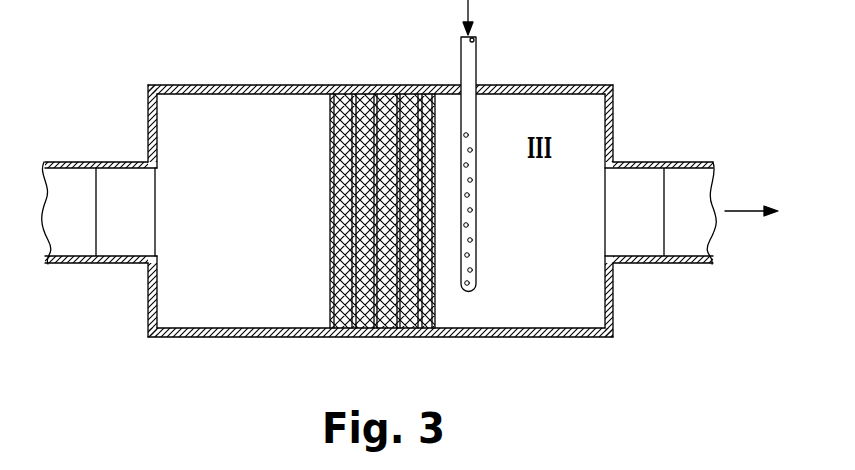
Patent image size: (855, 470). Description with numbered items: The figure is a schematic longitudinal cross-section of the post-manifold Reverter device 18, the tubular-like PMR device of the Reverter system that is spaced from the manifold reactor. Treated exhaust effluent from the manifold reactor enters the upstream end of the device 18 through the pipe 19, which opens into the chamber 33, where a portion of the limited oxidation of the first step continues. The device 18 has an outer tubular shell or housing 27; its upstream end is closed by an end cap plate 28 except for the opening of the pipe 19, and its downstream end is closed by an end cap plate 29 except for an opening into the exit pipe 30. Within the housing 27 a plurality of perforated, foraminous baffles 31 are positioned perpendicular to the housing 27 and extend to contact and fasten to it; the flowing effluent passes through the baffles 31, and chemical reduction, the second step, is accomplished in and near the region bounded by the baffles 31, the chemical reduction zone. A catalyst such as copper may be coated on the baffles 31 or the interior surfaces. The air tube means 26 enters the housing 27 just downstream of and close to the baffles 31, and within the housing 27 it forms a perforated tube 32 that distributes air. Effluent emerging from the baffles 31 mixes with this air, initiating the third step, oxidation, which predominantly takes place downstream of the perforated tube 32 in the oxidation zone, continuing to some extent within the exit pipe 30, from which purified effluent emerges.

The post-manifold Reverter device 18 is at (382, 204).
The pipe 19 is at (72, 161).
The air tube means 26 is at (493, 146).
The housing 27 is at (193, 339).
The end cap plate 28 is at (148, 299).
The end cap plate 29 is at (614, 297).
The exit pipe 30 is at (678, 161).
The baffles 31 is at (398, 263).
The perforated tube 32 is at (479, 246).
The chamber 33 is at (233, 224).